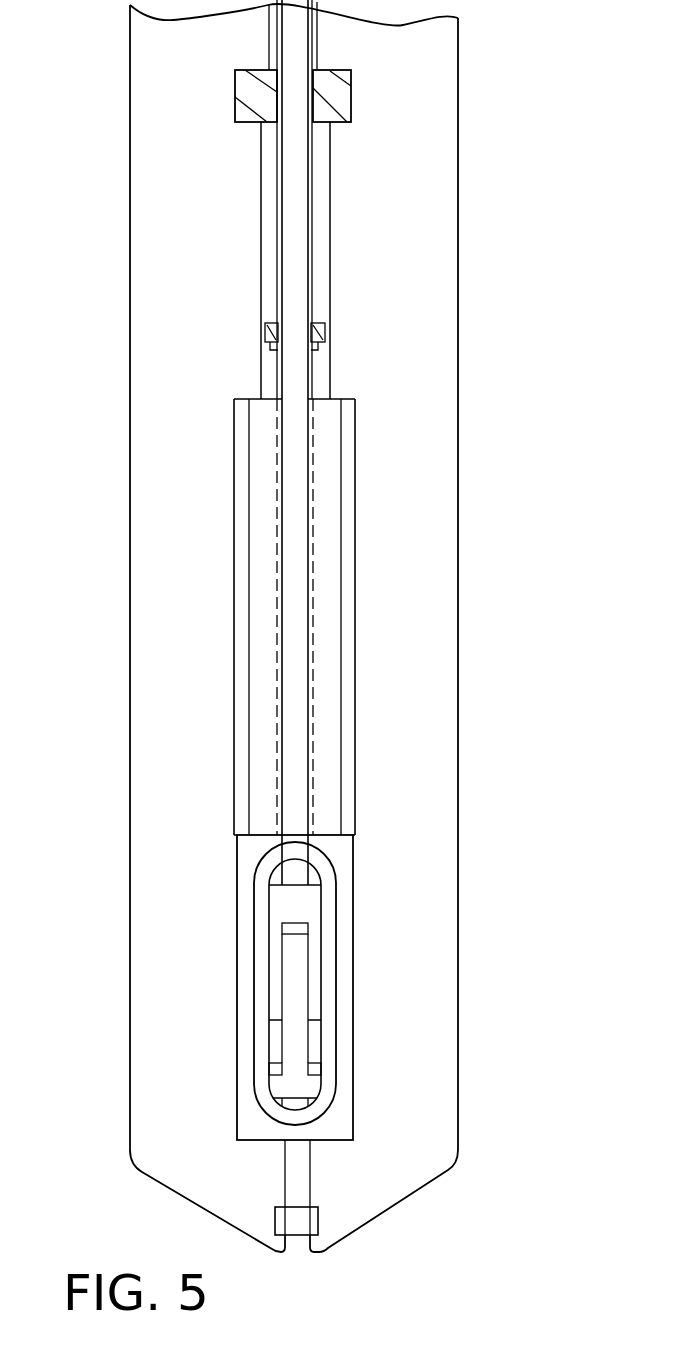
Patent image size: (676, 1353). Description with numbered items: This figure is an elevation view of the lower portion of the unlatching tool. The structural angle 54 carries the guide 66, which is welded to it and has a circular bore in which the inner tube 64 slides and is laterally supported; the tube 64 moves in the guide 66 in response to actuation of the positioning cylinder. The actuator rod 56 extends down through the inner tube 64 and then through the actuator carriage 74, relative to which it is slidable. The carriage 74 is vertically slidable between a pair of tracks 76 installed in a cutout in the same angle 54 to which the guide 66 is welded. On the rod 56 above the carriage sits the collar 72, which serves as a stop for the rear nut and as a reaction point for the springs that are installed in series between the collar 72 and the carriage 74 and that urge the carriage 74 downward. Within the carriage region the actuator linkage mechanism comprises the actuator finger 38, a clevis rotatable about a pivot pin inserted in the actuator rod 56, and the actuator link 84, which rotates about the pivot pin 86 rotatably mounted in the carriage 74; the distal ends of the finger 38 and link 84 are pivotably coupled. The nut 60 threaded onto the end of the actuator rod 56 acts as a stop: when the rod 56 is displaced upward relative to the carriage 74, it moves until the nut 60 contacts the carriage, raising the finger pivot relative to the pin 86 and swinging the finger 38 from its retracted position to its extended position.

The angle 54 is at (458, 139).
The actuator rod 56 is at (293, 188).
The inner tube 64 is at (313, 235).
The guide 66 is at (343, 93).
The collar 72 is at (326, 340).
The tracks 76 is at (241, 497).
The actuator carriage 74 is at (343, 1003).
The actuator finger 38 is at (300, 902).
The actuator link 84 is at (295, 958).
The pivot pin 86 is at (281, 1086).
The nut 60 is at (313, 1218).